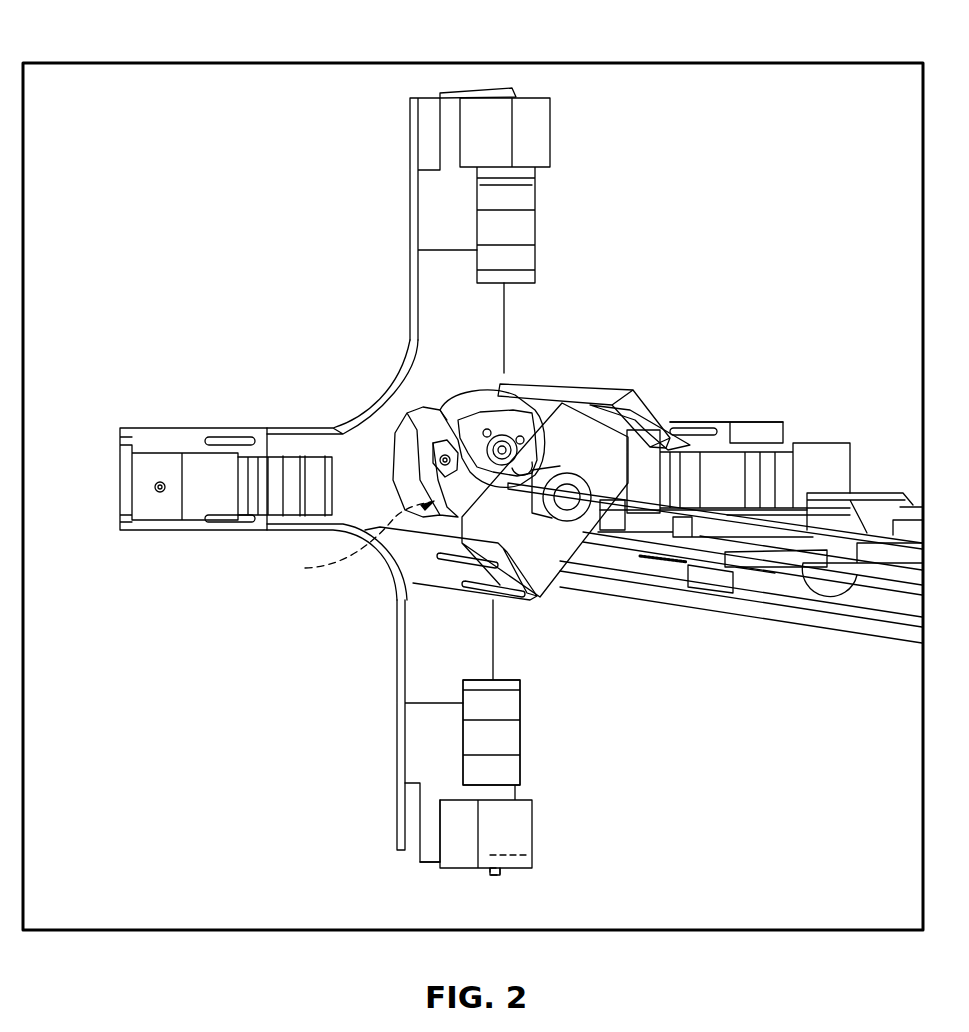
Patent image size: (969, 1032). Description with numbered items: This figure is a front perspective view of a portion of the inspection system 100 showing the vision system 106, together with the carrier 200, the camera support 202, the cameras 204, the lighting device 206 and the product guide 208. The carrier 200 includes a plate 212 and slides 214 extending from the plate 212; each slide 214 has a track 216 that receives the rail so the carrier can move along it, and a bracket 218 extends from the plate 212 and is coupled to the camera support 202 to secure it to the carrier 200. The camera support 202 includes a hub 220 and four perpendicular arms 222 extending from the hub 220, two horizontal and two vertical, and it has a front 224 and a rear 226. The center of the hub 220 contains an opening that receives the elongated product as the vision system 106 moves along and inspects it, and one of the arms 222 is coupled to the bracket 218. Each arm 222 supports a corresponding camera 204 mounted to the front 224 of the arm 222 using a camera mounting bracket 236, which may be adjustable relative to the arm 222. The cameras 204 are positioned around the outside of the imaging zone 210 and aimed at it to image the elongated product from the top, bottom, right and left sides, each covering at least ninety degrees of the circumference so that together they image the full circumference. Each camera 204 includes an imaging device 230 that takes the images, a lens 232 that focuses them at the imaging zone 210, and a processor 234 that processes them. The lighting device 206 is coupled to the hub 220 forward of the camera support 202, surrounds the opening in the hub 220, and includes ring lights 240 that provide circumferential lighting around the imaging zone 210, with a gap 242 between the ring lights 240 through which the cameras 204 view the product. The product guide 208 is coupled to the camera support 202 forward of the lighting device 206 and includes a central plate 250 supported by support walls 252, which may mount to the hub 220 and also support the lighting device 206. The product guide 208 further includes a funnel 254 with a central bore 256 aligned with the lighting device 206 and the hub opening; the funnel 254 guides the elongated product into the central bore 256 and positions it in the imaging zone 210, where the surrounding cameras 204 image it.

The inspection system 100 is at (728, 58).
The vision system 106 is at (249, 229).
The carrier 200 is at (770, 558).
The camera support 202 is at (500, 325).
The camera 204 is at (208, 515).
The lighting device 206 is at (423, 407).
The product guide 208 is at (572, 468).
The imaging zone 210 is at (339, 545).
The plate 212 is at (683, 553).
The slide 214 is at (727, 582).
The track 216 is at (750, 588).
The bracket 218 is at (735, 440).
The hub 220 is at (382, 428).
The arm 222 is at (420, 300).
The front 224 is at (413, 670).
The rear 226 is at (413, 667).
The imaging device 230 is at (467, 843).
The lens 232 is at (510, 735).
The processor 234 is at (530, 862).
The camera mounting bracket 236 is at (435, 767).
The ring light 240 is at (400, 596).
The gap 242 is at (463, 396).
The central plate 250 is at (545, 548).
The support wall 252 is at (560, 385).
The funnel 254 is at (612, 440).
The central bore 256 is at (577, 510).